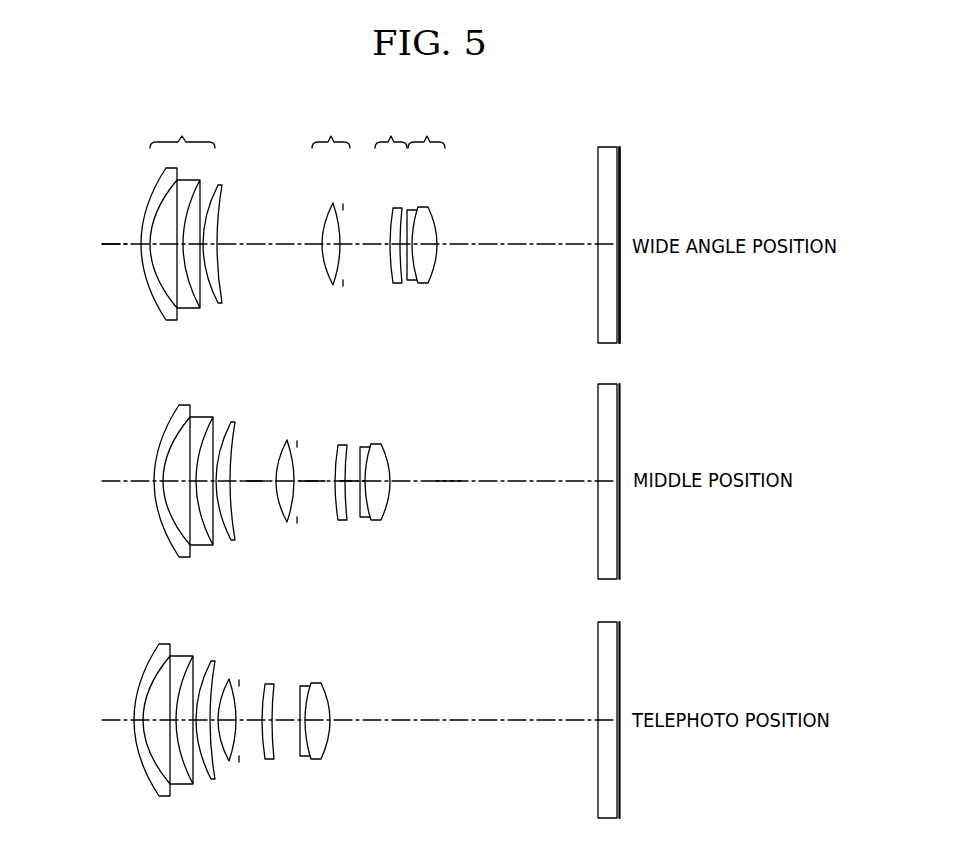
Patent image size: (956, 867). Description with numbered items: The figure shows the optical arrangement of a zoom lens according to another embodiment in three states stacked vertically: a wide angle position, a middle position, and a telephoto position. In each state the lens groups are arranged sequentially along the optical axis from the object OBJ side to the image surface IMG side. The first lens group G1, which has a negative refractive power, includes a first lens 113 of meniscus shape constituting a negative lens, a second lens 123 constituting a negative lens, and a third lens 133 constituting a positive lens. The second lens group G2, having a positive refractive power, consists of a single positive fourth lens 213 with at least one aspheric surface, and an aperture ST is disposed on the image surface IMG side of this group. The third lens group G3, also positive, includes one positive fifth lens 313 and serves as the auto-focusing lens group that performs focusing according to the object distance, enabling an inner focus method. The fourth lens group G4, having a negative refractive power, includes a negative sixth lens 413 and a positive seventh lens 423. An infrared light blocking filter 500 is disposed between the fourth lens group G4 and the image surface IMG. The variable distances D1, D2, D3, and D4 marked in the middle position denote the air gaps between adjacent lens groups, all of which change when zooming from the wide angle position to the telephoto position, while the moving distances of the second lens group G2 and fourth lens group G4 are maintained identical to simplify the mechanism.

The first lens 113 is at (167, 321).
The second lens 123 is at (195, 309).
The third lens 133 is at (220, 303).
The fourth lens 213 is at (333, 286).
The fifth lens 313 is at (395, 284).
The sixth lens 413 is at (410, 281).
The seventh lens 423 is at (425, 284).
The infrared light blocking filter 500 is at (598, 327).
The first lens group G1 is at (182, 129).
The second lens group G2 is at (331, 129).
The third lens group G3 is at (391, 129).
The fourth lens group G4 is at (426, 129).
The aperture ST is at (343, 207).
The image surface IMG is at (619, 159).
The object OBJ is at (95, 246).
The variable distance D1 is at (255, 482).
The variable distance D2 is at (313, 482).
The variable distance D3 is at (352, 482).
The variable distance D4 is at (447, 482).